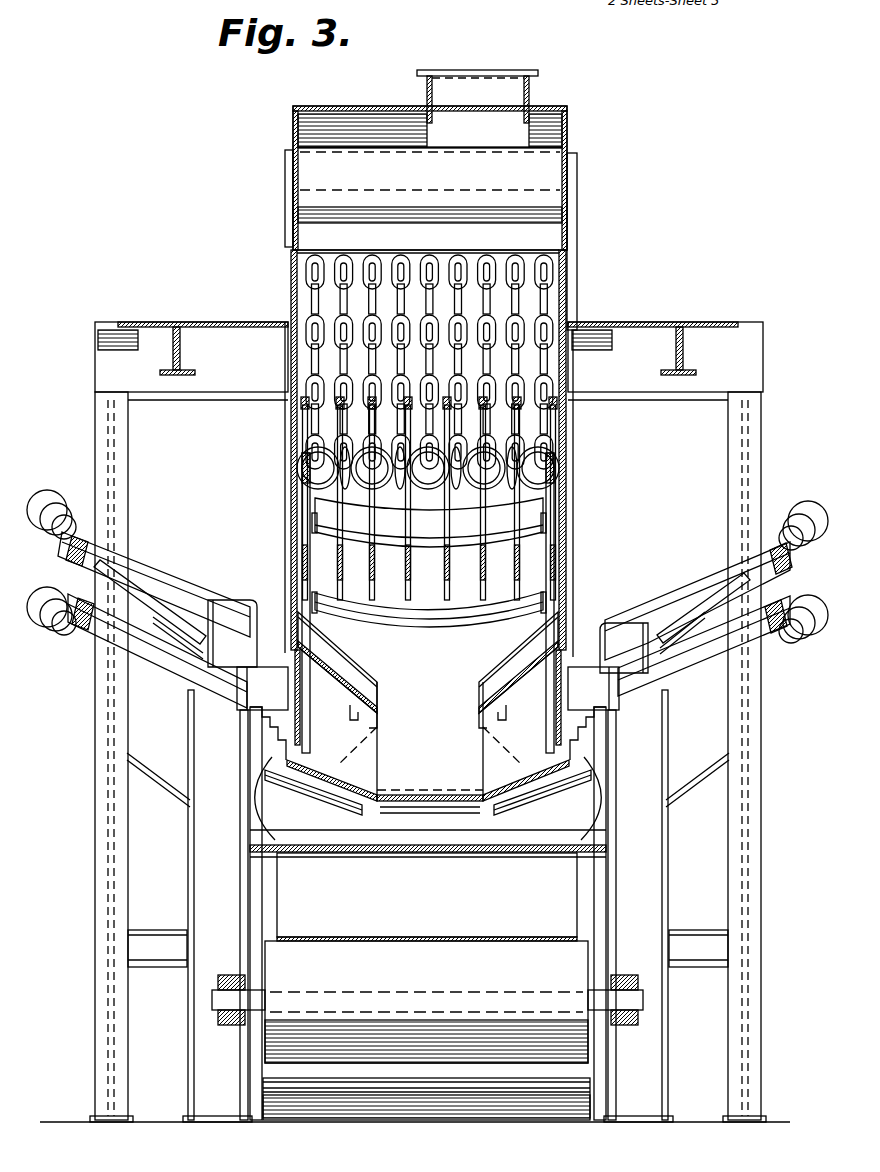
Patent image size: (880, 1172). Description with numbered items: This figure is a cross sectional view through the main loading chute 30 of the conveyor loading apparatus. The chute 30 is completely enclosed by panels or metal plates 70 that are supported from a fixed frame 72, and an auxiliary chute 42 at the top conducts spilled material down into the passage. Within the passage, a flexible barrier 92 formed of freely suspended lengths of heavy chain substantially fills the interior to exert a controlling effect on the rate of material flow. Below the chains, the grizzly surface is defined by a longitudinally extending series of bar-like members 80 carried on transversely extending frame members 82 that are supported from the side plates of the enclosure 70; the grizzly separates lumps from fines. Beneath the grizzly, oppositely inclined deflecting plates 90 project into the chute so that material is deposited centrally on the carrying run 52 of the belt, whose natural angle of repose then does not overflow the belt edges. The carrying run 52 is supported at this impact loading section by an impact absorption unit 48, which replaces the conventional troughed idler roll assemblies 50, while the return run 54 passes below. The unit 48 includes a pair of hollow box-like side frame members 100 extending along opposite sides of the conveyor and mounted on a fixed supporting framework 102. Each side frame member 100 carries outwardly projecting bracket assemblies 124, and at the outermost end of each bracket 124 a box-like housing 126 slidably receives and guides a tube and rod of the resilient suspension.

The main loading chute 30 is at (590, 236).
The auxiliary chute 42 is at (430, 160).
The impact absorption unit 48 is at (189, 582).
The troughed idler roll assemblies 50 is at (538, 797).
The carrying run 52 is at (415, 797).
The return run 54 is at (416, 938).
The enclosure panels 70 is at (580, 521).
The frame beam 72 is at (693, 323).
The bar-like members 80 is at (368, 574).
The transversely extending frame members 82 is at (445, 648).
The deflecting plates 90 is at (352, 665).
The flexible barrier 92 is at (556, 303).
The side frame members 100 is at (228, 630).
The fixed supporting framework 102 is at (204, 866).
The bracket assemblies 124 is at (145, 572).
The box-like housing 126 is at (105, 548).